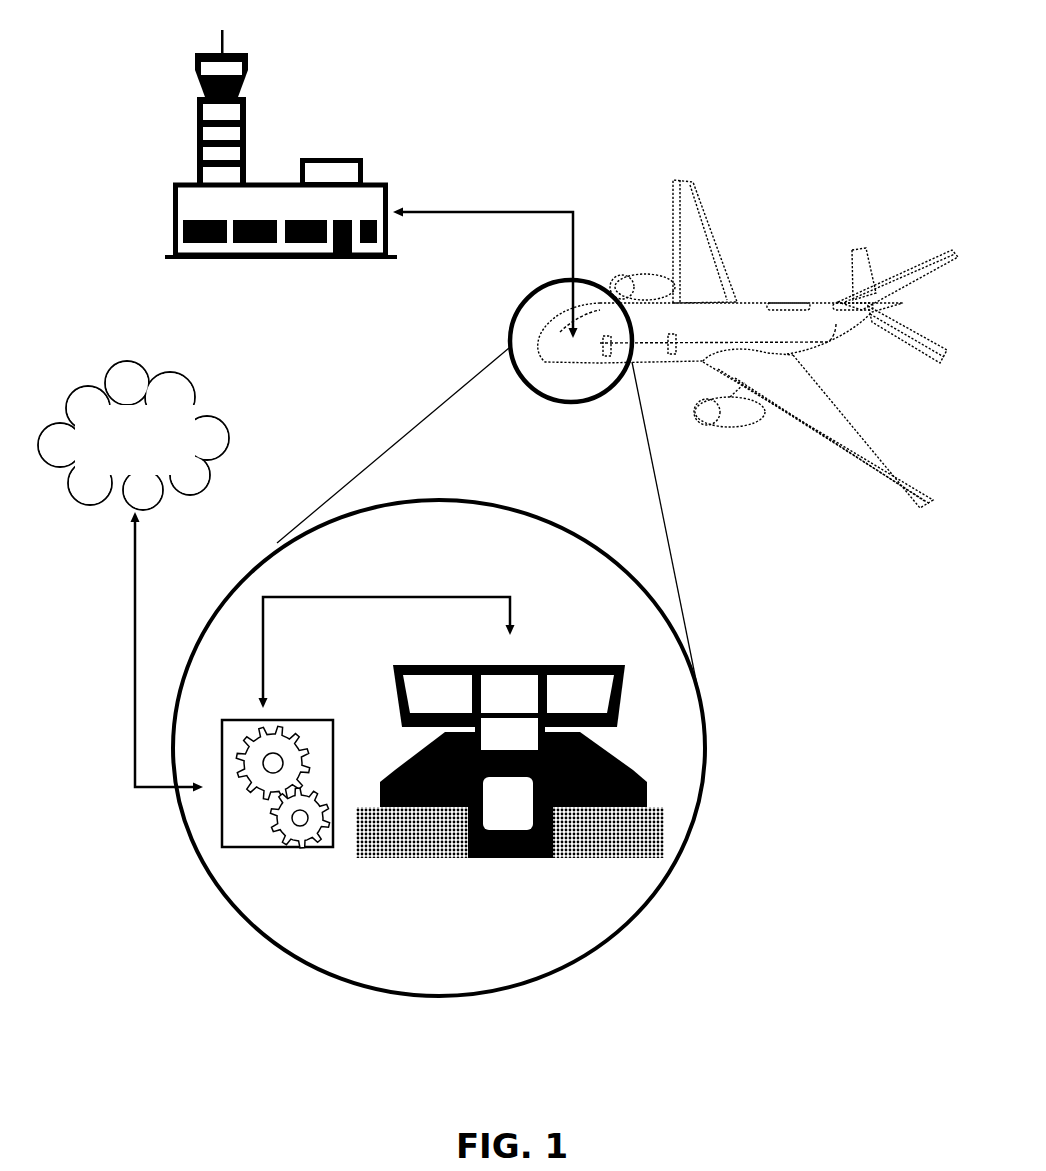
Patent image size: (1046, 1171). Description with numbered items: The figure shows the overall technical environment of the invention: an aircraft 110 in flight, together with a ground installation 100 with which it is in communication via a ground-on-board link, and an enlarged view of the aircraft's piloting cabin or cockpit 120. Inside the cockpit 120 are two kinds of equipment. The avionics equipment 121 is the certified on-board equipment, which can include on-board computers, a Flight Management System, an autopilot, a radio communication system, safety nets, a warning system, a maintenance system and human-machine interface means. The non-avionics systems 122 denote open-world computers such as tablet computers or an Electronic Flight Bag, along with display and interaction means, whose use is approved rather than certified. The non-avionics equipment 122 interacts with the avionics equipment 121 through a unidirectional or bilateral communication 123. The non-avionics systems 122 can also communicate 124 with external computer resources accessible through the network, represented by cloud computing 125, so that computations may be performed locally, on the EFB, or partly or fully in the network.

The ground station / air traffic control 100 is at (262, 52).
The aircraft 110 is at (715, 187).
The cockpit 120 is at (528, 300).
The avionics equipment 121 is at (570, 653).
The non-avionics systems 122 is at (287, 698).
The communication 123 is at (378, 592).
The communication 124 is at (137, 643).
The cloud computing 125 is at (160, 375).